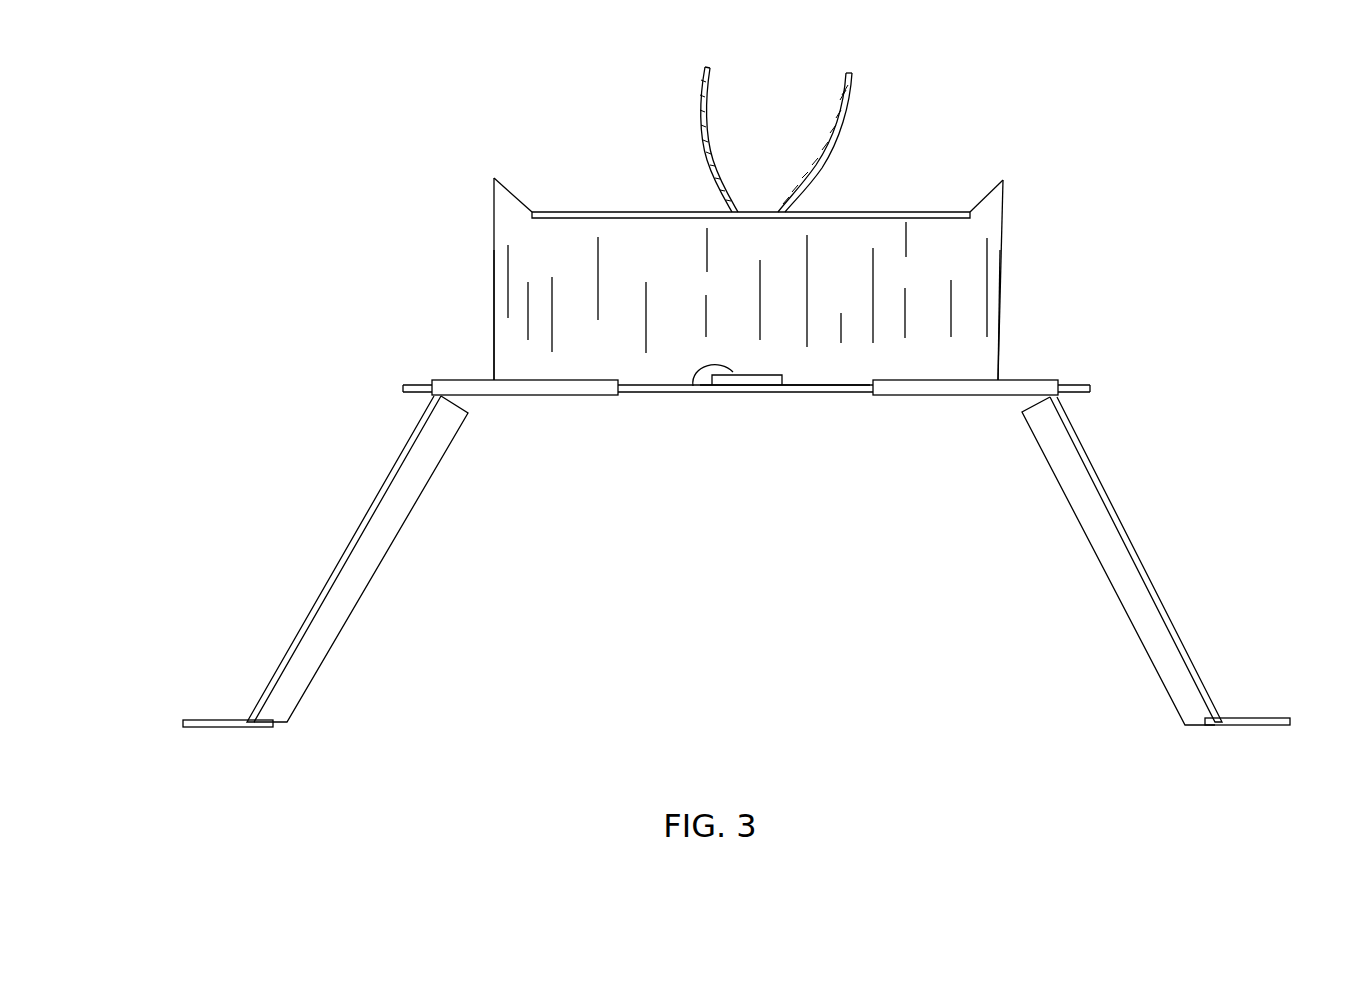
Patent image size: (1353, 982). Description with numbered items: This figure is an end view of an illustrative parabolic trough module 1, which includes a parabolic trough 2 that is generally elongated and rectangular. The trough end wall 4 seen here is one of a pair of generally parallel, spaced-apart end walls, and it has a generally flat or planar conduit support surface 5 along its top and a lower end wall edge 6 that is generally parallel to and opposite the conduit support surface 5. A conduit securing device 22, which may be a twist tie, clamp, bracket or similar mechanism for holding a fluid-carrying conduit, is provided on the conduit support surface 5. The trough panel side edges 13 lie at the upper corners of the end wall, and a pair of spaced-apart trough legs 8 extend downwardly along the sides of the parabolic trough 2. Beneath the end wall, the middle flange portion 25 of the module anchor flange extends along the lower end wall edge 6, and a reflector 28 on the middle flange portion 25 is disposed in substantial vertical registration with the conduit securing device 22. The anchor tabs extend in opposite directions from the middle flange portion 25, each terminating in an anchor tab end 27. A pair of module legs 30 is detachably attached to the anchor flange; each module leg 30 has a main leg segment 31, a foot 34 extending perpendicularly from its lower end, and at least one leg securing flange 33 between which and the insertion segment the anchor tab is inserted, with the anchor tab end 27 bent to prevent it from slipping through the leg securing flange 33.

The parabolic trough module 1 is at (391, 137).
The parabolic trough 2 is at (491, 290).
The trough end wall 4 is at (960, 236).
The conduit support surface 5 is at (858, 211).
The lower end wall edge 6 is at (833, 389).
The trough legs 8 is at (490, 330).
The trough panel side edges 13 is at (495, 179).
The conduit securing device 22 is at (832, 131).
The middle flange portion 25 is at (765, 393).
The anchor tab end 27 is at (414, 383).
The reflector 28 is at (695, 394).
The module leg 30 is at (357, 523).
The main leg segment 31 is at (390, 487).
The leg securing flange 33 is at (566, 388).
The foot 34 is at (202, 721).